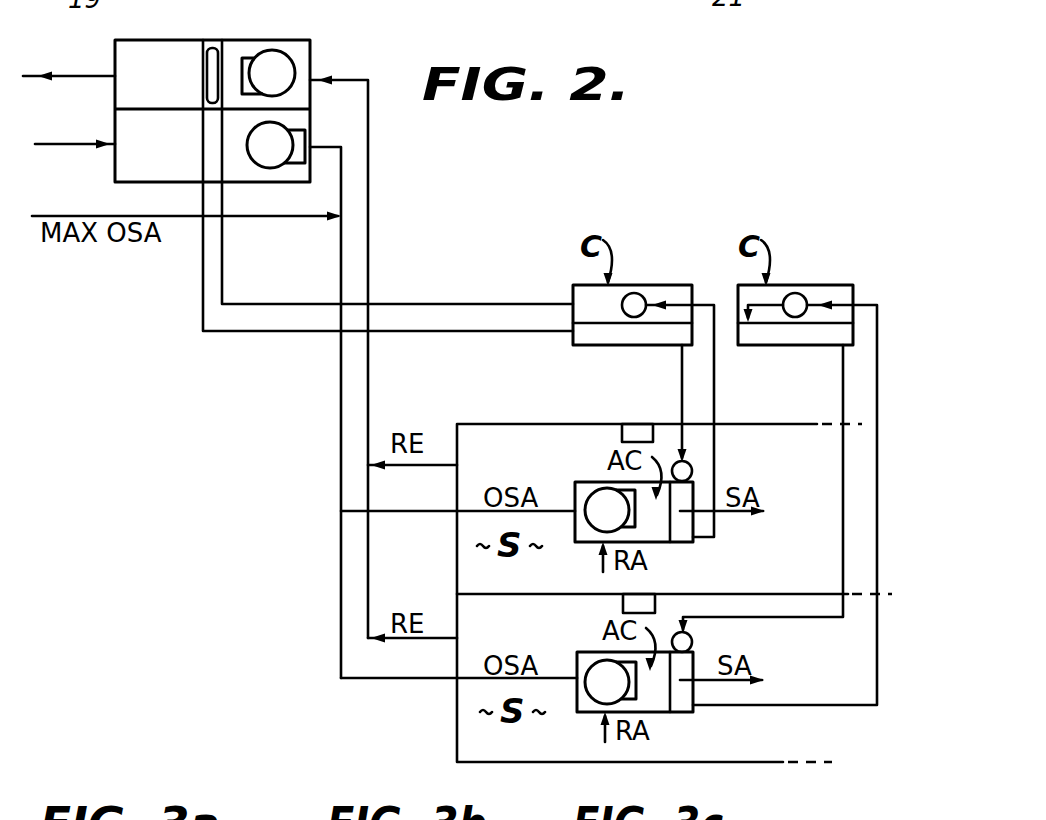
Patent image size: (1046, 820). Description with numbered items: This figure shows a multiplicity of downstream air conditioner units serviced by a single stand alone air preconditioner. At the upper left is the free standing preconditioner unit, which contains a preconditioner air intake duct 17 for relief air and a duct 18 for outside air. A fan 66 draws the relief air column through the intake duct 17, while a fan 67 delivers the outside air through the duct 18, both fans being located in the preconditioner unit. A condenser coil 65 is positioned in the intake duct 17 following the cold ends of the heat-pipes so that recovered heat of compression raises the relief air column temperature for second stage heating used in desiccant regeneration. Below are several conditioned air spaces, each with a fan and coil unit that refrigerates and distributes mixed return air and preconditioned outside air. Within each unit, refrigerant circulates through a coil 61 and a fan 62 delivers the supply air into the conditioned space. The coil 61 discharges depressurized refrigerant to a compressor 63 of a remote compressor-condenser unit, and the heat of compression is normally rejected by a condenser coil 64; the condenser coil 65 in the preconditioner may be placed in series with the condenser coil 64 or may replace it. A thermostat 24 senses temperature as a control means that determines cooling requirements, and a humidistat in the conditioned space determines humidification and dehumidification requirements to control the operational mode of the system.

The preconditioner air intake duct 17 is at (192, 87).
The duct 18 is at (192, 154).
The condenser coil 65 is at (221, 47).
The fan 66 is at (291, 62).
The fan 67 is at (283, 133).
The compressor 63 is at (642, 293).
The condenser coil 64 is at (620, 345).
The coil 61 is at (683, 542).
The fan 62 is at (600, 489).
The thermostat 24 is at (636, 432).